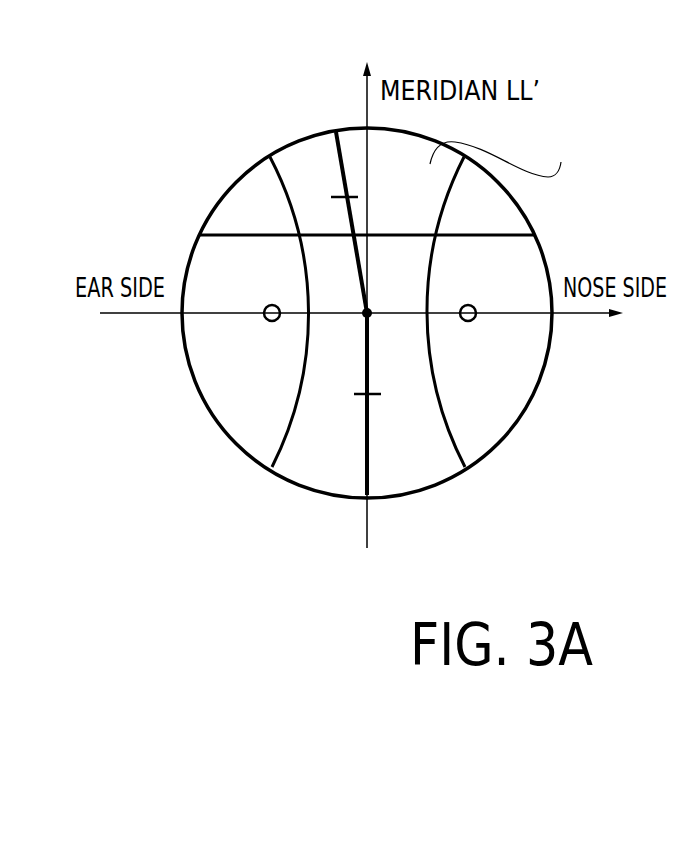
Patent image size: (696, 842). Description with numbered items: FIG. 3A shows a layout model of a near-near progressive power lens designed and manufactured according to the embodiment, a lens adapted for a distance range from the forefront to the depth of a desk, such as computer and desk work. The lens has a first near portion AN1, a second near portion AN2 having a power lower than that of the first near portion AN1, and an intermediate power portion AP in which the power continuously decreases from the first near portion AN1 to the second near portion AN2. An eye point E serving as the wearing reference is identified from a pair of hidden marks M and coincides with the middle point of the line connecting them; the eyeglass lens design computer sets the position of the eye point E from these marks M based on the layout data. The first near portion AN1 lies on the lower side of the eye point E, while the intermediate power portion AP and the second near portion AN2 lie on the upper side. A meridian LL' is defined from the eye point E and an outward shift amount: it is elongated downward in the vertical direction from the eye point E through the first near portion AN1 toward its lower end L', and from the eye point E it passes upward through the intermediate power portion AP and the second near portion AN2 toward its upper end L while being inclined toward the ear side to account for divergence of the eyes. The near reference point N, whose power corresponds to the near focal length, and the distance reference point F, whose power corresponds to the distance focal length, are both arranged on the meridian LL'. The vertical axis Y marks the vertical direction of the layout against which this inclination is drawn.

The intermediate power portion AP is at (531, 268).
The first near portion AN1 is at (503, 402).
The second near portion AN2 is at (513, 155).
The meridian L is at (351, 203).
The meridian L' is at (379, 423).
The eye point E is at (376, 298).
The distance reference point F is at (338, 179).
The near reference point N is at (377, 408).
The hidden marks M is at (370, 330).
The vertical axis Y is at (368, 287).